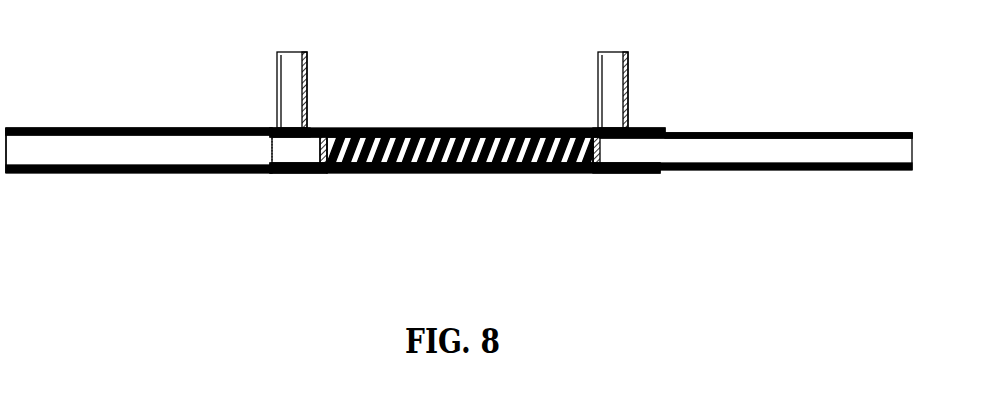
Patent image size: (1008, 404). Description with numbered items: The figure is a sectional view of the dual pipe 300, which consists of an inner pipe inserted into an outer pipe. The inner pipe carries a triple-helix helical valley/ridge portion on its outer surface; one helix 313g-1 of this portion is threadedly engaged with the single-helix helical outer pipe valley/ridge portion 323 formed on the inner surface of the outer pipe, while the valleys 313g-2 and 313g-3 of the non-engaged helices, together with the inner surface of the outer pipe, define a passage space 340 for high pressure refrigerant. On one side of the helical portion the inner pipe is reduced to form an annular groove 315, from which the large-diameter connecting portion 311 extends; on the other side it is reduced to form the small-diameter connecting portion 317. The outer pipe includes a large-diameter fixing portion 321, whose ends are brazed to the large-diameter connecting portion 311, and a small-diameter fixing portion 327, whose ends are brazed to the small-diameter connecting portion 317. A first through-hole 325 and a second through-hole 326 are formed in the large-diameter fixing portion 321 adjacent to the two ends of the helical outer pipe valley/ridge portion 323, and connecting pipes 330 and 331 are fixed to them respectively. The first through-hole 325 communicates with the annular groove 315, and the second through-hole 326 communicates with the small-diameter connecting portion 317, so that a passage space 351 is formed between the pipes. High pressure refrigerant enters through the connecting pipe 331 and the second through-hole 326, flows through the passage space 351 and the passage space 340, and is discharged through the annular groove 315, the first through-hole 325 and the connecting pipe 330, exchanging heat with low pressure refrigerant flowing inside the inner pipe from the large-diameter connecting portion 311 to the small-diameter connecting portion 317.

The dual pipe 300 is at (131, 20).
The large-diameter connecting portion 311 is at (50, 173).
The helical valley/ridge portion 313g-1 is at (363, 173).
The valley 313g-2 is at (382, 173).
The valley 313g-3 is at (422, 173).
The annular groove 315 is at (288, 173).
The small-diameter connecting portion 317 is at (815, 171).
The large-diameter fixing portion 321 is at (213, 128).
The helical outer pipe valley/ridge portion 323 is at (372, 130).
The first through-hole 325 is at (290, 128).
The second through-hole 326 is at (612, 128).
The small-diameter fixing portion 327 is at (731, 130).
The connecting pipe 330 is at (303, 77).
The connecting pipe 331 is at (628, 75).
The passage space 340 is at (437, 131).
The passage space 351 is at (293, 173).